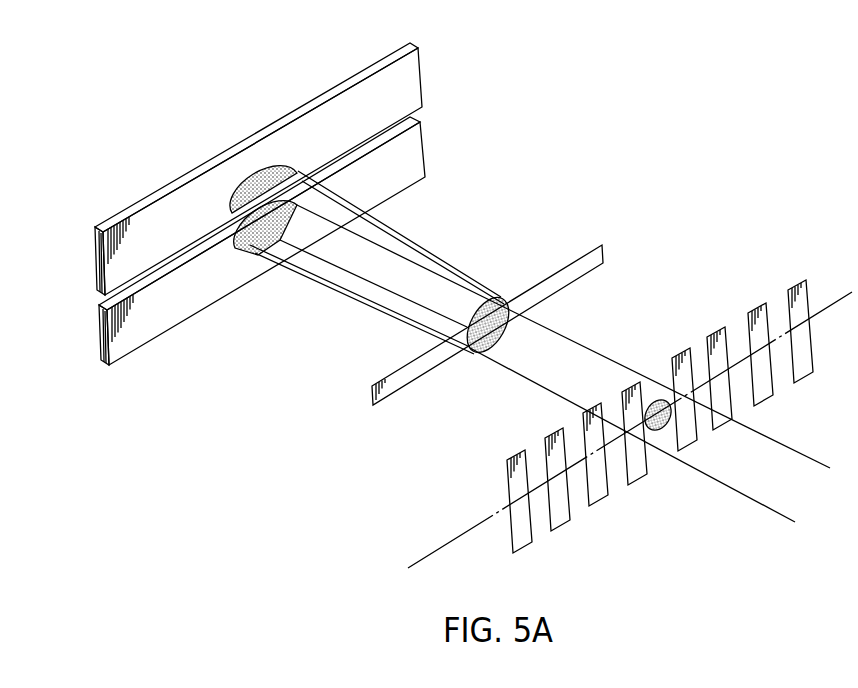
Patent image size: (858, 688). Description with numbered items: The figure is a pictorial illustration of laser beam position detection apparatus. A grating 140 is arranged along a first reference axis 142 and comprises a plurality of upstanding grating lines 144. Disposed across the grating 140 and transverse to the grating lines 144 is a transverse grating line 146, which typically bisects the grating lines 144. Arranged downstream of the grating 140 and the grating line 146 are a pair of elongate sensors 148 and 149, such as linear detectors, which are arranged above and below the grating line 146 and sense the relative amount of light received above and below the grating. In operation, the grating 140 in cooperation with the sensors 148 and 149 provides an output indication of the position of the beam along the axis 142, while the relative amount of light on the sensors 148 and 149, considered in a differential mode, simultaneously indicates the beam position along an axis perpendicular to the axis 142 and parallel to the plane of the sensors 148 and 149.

The elongate sensor 148 is at (130, 218).
The elongate sensor 149 is at (168, 313).
The transverse grating line 146 is at (403, 380).
The upstanding grating lines 144 is at (683, 363).
The grating 140 is at (762, 312).
The first reference axis 142 is at (852, 290).